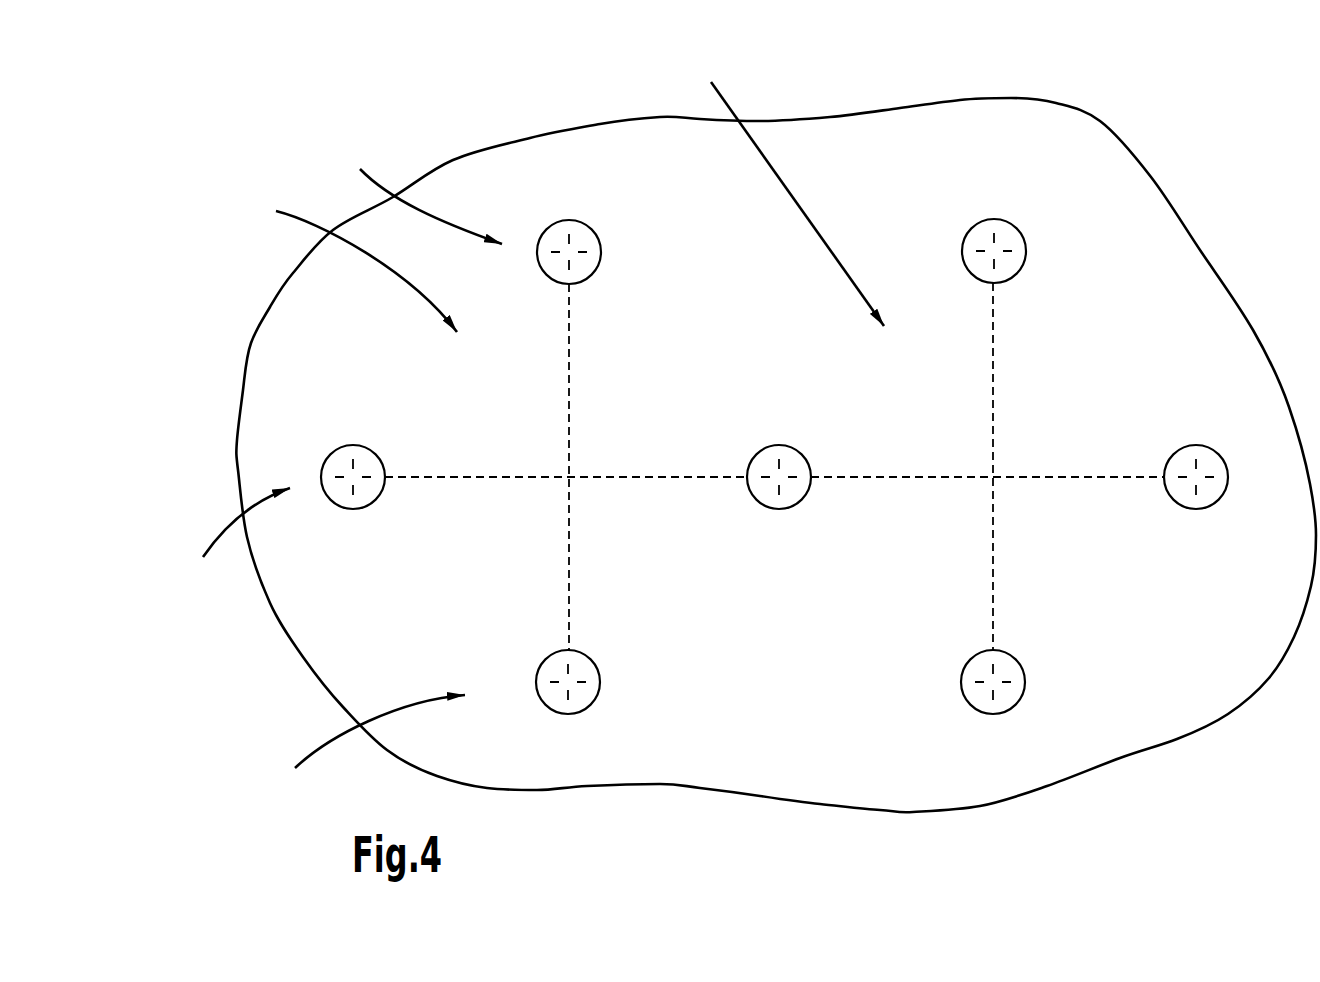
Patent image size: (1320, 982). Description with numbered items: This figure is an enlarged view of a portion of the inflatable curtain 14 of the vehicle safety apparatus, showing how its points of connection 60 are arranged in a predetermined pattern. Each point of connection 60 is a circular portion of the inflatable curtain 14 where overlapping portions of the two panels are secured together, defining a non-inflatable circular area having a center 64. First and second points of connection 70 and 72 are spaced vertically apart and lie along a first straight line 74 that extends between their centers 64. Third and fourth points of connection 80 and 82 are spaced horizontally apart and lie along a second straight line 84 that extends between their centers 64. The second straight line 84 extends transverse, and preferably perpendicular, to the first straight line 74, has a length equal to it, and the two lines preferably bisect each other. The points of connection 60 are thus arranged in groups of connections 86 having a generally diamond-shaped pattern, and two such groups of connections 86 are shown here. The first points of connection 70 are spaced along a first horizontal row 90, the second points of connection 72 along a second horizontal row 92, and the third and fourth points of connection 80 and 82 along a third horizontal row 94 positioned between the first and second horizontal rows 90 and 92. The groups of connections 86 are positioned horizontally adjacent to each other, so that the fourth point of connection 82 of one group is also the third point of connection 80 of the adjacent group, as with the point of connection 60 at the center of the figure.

The inflatable curtain 14 is at (1143, 246).
The points of connection 60 is at (550, 226).
The center 64 is at (569, 252).
The first points of connection 70 is at (593, 230).
The second points of connection 72 is at (595, 705).
The first straight line 74 is at (568, 532).
The third points of connection 80 is at (347, 510).
The fourth points of connection 82 is at (807, 500).
The second straight line 84 is at (481, 474).
The groups of connections 86 is at (563, 192).
The first horizontal row 90 is at (422, 192).
The second horizontal row 92 is at (361, 744).
The third horizontal row 94 is at (227, 530).